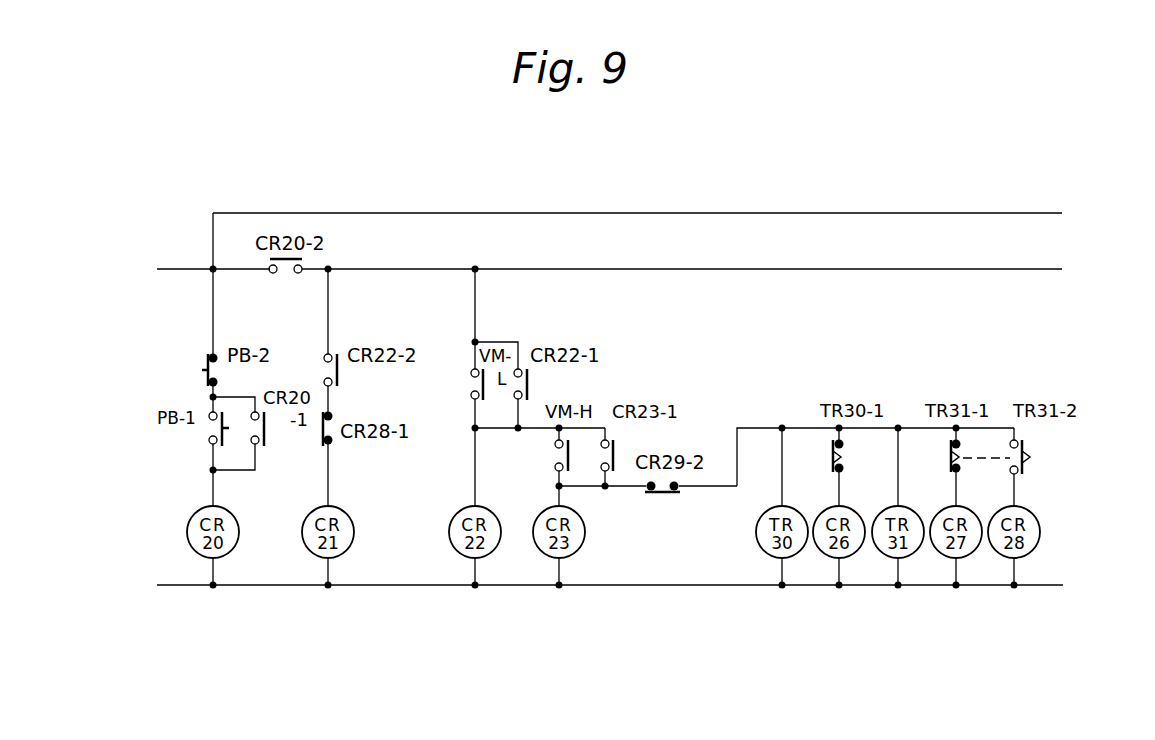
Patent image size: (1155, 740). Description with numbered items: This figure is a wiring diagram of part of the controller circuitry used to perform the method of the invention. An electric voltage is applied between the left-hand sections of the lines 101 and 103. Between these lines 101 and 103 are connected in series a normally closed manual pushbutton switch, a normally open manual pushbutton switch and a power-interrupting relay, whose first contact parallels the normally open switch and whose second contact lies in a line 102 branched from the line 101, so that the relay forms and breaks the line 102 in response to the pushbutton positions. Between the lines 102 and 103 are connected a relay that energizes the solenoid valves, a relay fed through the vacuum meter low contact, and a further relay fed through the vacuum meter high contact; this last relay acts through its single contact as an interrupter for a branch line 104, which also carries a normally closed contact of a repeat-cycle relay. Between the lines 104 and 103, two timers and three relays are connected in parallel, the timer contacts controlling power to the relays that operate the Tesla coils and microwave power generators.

The line 101 is at (608, 280).
The line 102 is at (702, 263).
The line 103 is at (608, 585).
The branch line 104 is at (875, 444).